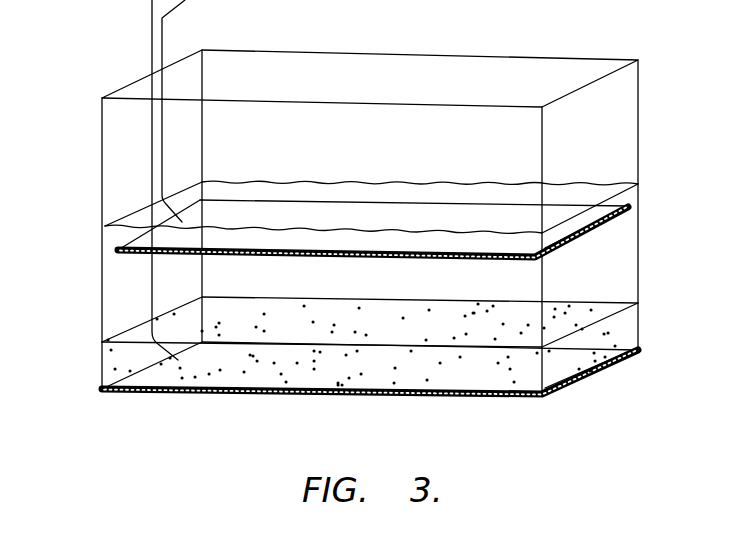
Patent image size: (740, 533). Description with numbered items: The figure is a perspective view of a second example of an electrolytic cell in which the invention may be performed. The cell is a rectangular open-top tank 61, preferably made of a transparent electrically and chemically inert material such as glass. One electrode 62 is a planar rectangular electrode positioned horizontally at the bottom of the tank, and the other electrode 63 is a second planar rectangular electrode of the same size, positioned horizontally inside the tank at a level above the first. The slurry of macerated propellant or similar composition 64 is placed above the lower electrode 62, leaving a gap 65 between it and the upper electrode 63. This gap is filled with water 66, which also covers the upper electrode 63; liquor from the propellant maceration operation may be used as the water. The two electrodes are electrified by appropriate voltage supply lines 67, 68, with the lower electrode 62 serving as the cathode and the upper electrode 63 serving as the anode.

The rectangular open-top tank 61 is at (638, 157).
The lower electrode 62 is at (333, 395).
The upper electrode 63 is at (640, 207).
The slurry of macerated propellant 64 is at (612, 332).
The gap 65 is at (90, 248).
The water 66 is at (617, 268).
The voltage supply line 67 is at (152, 48).
The voltage supply line 68 is at (163, 36).